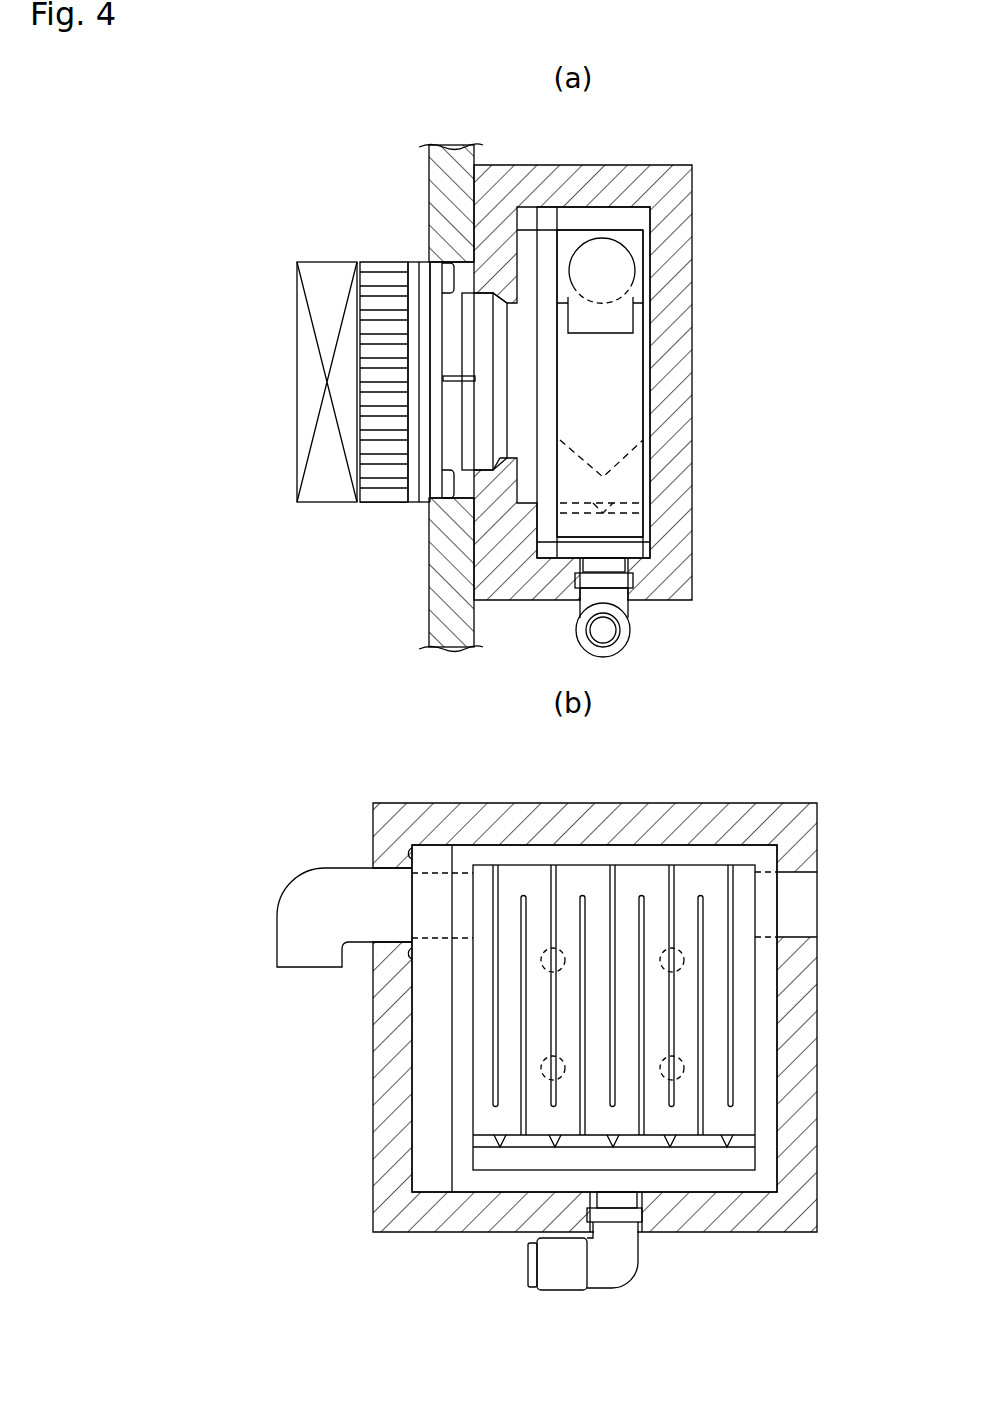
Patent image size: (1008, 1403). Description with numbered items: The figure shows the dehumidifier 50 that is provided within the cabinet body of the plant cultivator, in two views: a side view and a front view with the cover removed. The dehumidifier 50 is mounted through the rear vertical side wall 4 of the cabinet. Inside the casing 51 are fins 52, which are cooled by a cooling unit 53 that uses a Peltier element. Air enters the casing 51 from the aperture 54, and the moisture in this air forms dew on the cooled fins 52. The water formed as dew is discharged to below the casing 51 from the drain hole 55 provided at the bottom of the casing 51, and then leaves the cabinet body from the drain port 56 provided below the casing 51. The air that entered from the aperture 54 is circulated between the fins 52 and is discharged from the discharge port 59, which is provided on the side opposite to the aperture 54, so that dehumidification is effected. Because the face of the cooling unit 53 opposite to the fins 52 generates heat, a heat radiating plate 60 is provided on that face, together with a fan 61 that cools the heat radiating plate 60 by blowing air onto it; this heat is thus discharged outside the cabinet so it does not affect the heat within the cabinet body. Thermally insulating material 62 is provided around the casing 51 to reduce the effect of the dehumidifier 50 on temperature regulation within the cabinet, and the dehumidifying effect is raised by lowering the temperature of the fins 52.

The rear vertical side wall 4 is at (444, 607).
The dehumidifier 50 is at (747, 192).
The casing 51 is at (610, 210).
The fins 52 is at (630, 372).
The cooling unit 53 is at (470, 463).
The aperture 54 is at (620, 270).
The drain hole 55 is at (606, 498).
The drain port 56 is at (630, 632).
The discharge port 59 is at (800, 937).
The heat radiating plate 60 is at (384, 262).
The fan 61 is at (297, 327).
The thermally insulating material 62 is at (532, 172).